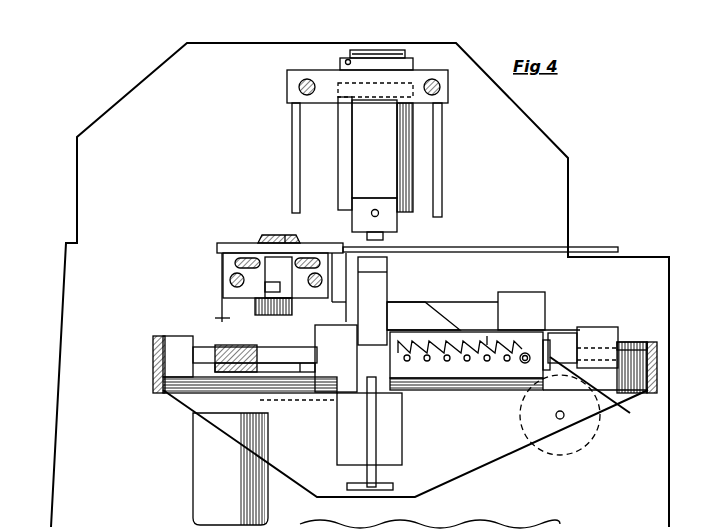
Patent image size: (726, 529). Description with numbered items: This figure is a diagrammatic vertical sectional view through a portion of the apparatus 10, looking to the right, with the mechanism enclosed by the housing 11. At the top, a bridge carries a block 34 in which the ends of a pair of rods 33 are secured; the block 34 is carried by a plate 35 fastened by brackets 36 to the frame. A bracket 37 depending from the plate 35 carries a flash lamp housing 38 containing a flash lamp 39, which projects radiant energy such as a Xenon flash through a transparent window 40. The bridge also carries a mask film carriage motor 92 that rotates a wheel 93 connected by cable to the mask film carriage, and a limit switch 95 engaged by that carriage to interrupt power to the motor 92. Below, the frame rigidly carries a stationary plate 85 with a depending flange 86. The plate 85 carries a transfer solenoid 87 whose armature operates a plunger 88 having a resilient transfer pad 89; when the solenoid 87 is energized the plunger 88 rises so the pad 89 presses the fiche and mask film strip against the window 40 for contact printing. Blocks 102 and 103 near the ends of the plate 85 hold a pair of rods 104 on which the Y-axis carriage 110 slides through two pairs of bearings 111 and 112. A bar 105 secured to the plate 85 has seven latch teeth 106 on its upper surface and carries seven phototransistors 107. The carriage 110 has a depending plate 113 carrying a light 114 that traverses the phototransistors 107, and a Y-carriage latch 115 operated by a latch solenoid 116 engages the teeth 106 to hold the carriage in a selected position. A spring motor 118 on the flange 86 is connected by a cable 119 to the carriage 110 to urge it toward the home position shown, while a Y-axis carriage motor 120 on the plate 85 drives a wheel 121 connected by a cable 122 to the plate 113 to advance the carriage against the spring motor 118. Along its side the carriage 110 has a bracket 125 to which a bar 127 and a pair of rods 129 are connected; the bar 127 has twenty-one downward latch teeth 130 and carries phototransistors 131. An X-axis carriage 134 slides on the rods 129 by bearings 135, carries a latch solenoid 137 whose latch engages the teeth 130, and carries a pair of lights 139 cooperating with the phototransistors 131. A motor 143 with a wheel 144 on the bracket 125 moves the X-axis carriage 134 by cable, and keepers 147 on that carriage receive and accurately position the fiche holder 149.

The apparatus 10 is at (560, 128).
The housing 11 is at (77, 195).
The rods 33 is at (300, 84).
The block 34 is at (318, 70).
The plate 35 is at (338, 97).
The brackets 36 is at (292, 125).
The bracket 37 is at (358, 150).
The flash lamp housing 38 is at (398, 218).
The flash lamp 39 is at (376, 207).
The transparent window 40 is at (384, 237).
The mask film carriage motor 92 is at (415, 125).
The wheel 93 is at (392, 50).
The mask film carriage limit switch 95 is at (348, 60).
The plate 85 is at (460, 378).
The depending flange 86 is at (485, 462).
The transfer solenoid 87 is at (402, 445).
The plunger 88 is at (387, 290).
The resilient transfer pad 89 is at (387, 267).
The block 102 is at (163, 360).
The block 103 is at (657, 358).
The rods 104 is at (205, 345).
The bar 105 is at (425, 380).
The latch teeth 106 is at (464, 340).
The phototransistors 107 is at (488, 363).
The Y-axis carriage 110 is at (568, 336).
The bearings 111 is at (622, 342).
The bearings 112 is at (330, 376).
The depending plate 113 is at (486, 338).
The light 114 is at (525, 364).
The Y-carriage latch 115 is at (548, 338).
The latch solenoid 116 is at (518, 300).
The spring motor 118 is at (590, 438).
The cable 119 is at (618, 382).
The Y-axis carriage motor 120 is at (193, 502).
The wheel 121 is at (229, 373).
The cable 122 is at (300, 375).
The bracket 125 is at (425, 303).
The bar 127 is at (230, 280).
The rods 129 is at (265, 280).
The latch teeth 130 is at (257, 312).
The phototransistors 131 is at (255, 246).
The X-axis carriage 134 is at (223, 256).
The bearings 135 is at (222, 253).
The latch solenoid 137 is at (282, 312).
The lights 139 is at (235, 262).
The motor 143 is at (275, 373).
The wheel 144 is at (286, 236).
The keepers 147 is at (266, 236).
The fiche holder 149 is at (598, 250).